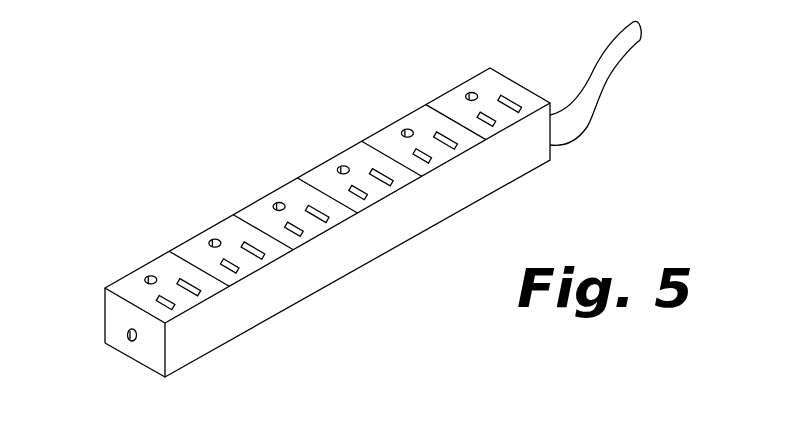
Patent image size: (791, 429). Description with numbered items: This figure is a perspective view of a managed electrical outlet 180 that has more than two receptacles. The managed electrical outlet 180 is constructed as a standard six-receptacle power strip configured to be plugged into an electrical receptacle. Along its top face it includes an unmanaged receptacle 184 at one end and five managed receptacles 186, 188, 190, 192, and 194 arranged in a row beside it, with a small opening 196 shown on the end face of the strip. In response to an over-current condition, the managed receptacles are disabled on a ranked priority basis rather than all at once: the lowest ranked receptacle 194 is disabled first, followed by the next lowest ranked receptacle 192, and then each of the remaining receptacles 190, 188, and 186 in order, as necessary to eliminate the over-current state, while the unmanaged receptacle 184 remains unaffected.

The managed electrical outlet 180 is at (387, 323).
The unmanaged receptacle 184 is at (455, 98).
The managed receptacle 186 is at (391, 134).
The managed receptacle 188 is at (327, 171).
The managed receptacle 190 is at (262, 208).
The next lowest ranked receptacle 192 is at (198, 246).
The lowest ranked receptacle 194 is at (134, 281).
The mounting hole 196 is at (127, 335).